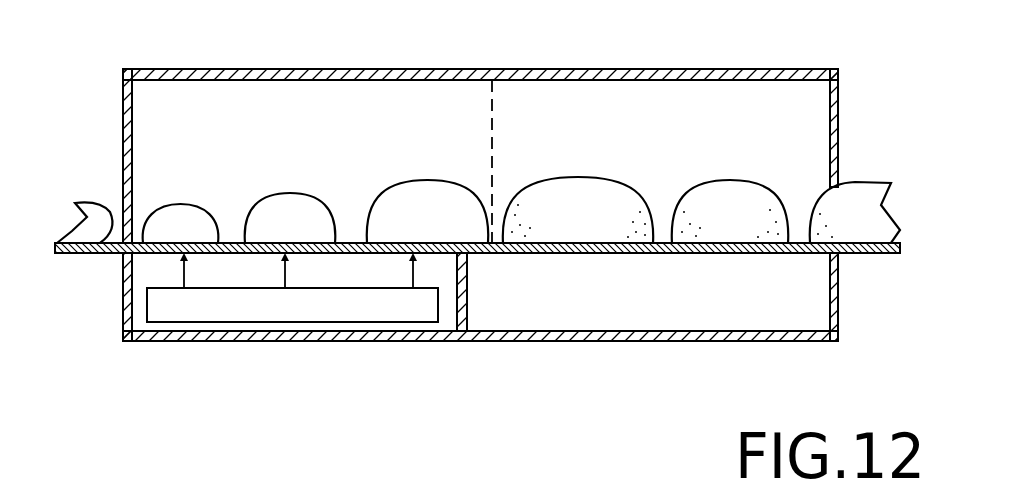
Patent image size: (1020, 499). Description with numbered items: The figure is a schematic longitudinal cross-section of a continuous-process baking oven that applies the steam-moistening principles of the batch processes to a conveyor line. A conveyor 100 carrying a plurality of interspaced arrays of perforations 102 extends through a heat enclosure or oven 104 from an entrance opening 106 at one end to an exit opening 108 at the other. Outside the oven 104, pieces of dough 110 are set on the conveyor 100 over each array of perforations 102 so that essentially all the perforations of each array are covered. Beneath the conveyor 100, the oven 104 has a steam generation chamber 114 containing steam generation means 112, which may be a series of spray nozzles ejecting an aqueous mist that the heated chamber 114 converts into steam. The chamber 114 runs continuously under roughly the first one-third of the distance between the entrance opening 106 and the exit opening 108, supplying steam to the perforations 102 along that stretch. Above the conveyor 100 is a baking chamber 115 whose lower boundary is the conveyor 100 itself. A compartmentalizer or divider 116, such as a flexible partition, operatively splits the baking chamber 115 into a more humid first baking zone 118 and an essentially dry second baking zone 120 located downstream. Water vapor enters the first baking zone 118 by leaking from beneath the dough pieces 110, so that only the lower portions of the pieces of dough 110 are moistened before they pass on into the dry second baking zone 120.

The conveyor 100 is at (880, 258).
The arrays of perforations 102 is at (66, 254).
The oven 104 is at (337, 343).
The entrance opening 106 is at (123, 195).
The exit opening 108 is at (840, 187).
The pieces of dough 110 is at (80, 203).
The steam generation means 112 is at (253, 310).
The steam generation chamber 114 is at (140, 315).
The baking chamber 115 is at (343, 88).
The divider 116 is at (500, 112).
The first baking zone 118 is at (295, 159).
The second baking zone 120 is at (665, 159).